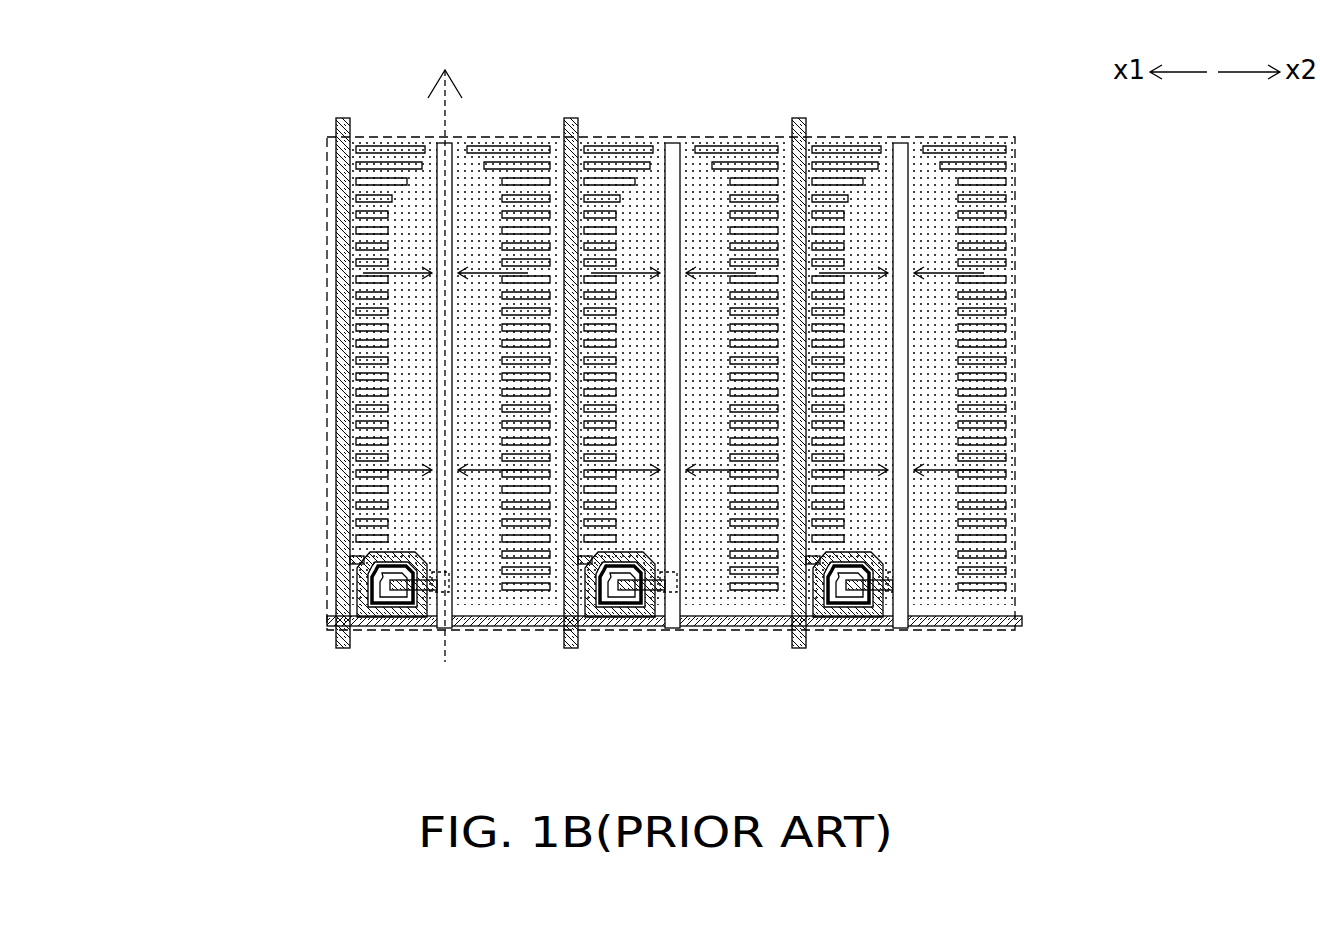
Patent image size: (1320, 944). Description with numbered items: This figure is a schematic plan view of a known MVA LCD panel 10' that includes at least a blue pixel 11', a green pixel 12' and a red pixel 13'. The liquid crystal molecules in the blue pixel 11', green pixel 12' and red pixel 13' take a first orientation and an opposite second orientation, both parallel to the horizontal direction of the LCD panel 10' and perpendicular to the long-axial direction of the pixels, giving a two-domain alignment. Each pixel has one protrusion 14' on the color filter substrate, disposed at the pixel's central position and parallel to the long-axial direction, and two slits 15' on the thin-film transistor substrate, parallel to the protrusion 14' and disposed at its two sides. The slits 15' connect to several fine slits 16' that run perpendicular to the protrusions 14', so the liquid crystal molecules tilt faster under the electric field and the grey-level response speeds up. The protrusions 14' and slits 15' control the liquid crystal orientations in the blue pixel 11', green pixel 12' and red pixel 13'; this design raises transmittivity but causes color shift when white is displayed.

The MVA LCD panel 10' is at (550, 388).
The blue pixel 11' is at (943, 385).
The green pixel 12' is at (617, 387).
The red pixel 13' is at (358, 388).
The protrusion 14' is at (994, 385).
The slit 15' is at (562, 412).
The fine slit 16' is at (291, 344).